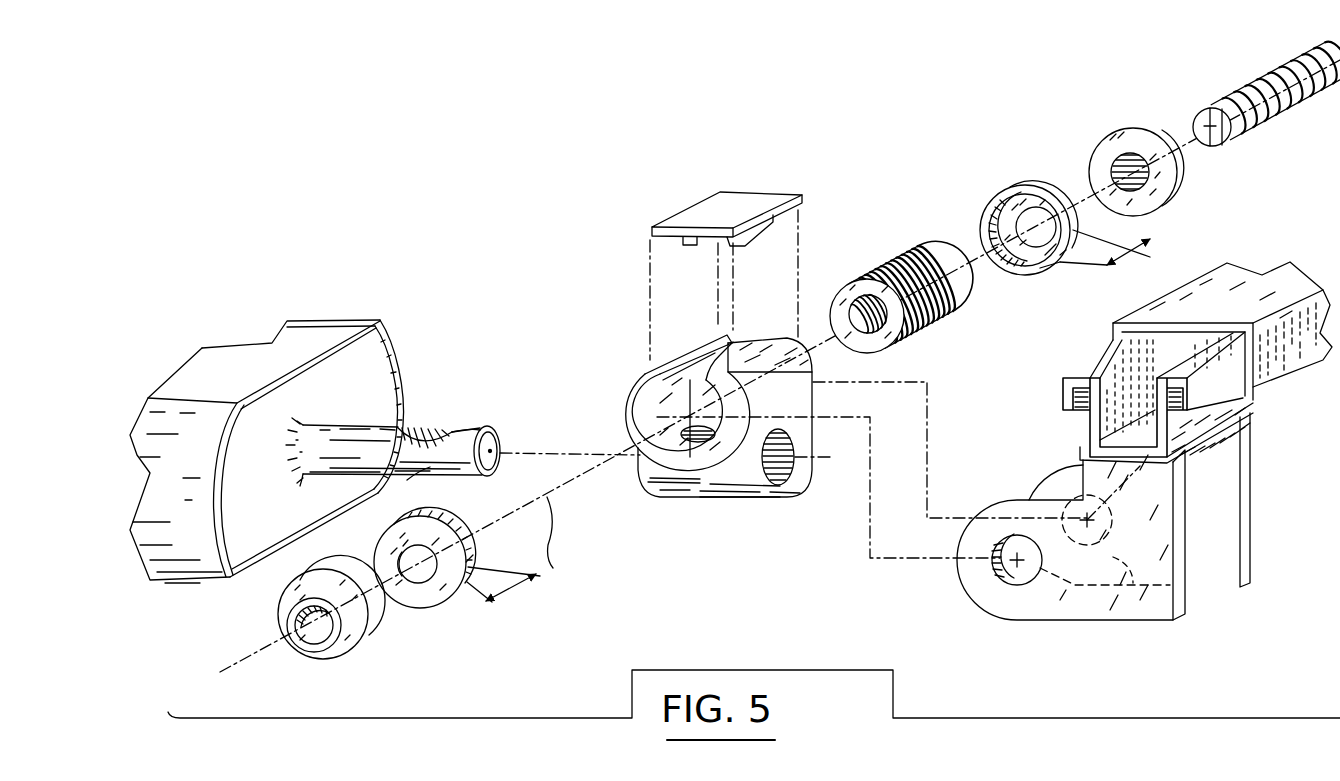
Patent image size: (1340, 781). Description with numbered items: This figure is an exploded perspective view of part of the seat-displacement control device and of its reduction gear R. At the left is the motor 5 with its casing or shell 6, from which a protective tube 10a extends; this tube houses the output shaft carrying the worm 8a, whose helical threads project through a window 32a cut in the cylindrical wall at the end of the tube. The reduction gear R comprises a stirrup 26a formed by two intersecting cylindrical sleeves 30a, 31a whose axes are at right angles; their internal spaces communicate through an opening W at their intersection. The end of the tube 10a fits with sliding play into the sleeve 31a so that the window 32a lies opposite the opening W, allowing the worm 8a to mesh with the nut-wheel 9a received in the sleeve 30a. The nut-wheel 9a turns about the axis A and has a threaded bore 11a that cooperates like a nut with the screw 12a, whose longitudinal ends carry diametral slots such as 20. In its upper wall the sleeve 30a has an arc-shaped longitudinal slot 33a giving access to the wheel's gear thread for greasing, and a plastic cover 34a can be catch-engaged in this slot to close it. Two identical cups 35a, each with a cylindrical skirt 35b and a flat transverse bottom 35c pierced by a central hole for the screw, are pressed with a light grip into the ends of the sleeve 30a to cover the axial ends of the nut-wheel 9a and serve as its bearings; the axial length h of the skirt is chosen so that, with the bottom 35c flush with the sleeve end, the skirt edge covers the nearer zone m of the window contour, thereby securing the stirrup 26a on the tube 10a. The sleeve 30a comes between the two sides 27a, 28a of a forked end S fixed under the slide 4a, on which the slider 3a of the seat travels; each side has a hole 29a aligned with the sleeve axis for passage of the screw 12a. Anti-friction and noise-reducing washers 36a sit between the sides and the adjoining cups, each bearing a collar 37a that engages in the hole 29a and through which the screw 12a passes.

The motor 5 is at (318, 296).
The casing or shell 6 is at (240, 370).
The protective tube 10a is at (367, 447).
The worm 8a is at (438, 428).
The window 32a is at (450, 428).
The zone of the window edge m is at (432, 467).
The cylindrical skirt 35b is at (470, 540).
The flat transverse bottom 35c is at (392, 572).
The cup 35a is at (1012, 182).
The anti-friction and noise reducing washer 36a is at (356, 646).
The collar 37a is at (308, 645).
The axial length of the cylindrical skirt h is at (823, 430).
The axis A is at (554, 545).
The cylindrical sleeve 30a is at (648, 378).
The longitudinal slot 33a is at (723, 347).
The opening W is at (681, 432).
The cylindrical sleeve 31a is at (695, 490).
The stirrup 26a is at (749, 506).
The reduction gear R is at (712, 553).
The cover 34a is at (710, 207).
The nut-wheel 9a is at (903, 250).
The threaded bore 11a is at (850, 311).
The screw 12a is at (1267, 83).
The slot 20 is at (1203, 123).
The slider 3a is at (1242, 293).
The slide 4a is at (1213, 383).
The forked end S is at (991, 635).
The side of the forked end 27a is at (1052, 603).
The side of the forked end 28a is at (1128, 592).
The hole 29a is at (1003, 583).